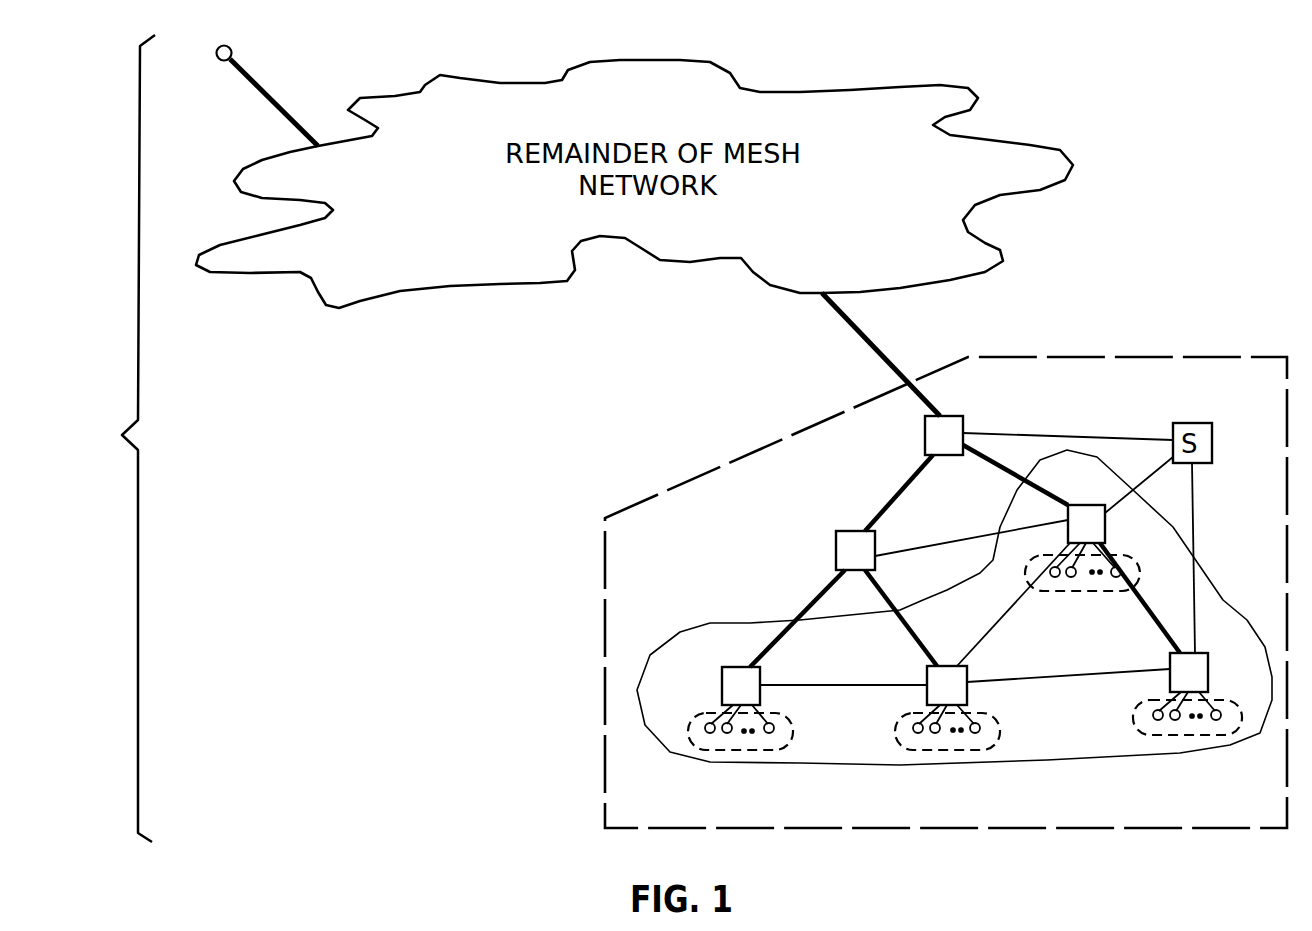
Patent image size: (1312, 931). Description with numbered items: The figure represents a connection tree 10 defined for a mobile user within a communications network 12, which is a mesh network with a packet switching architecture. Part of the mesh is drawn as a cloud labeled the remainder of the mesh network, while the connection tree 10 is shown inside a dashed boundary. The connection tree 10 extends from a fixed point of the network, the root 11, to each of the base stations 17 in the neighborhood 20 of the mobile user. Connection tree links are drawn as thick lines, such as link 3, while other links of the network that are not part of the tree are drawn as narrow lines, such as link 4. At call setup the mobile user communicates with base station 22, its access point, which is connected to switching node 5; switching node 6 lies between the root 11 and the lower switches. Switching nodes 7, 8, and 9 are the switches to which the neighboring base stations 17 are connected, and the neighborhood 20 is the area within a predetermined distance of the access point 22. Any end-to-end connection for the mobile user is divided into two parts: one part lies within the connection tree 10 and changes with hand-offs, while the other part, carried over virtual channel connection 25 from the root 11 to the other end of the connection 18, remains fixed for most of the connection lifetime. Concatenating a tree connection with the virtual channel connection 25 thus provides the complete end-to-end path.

The link 3 is at (902, 487).
The link 4 is at (953, 533).
The switching node 5 is at (948, 666).
The switching node 6 is at (835, 551).
The switching node 7 is at (720, 683).
The switching node 8 is at (1092, 505).
The switching node 9 is at (1210, 668).
The connection tree 10 is at (605, 592).
The root 11 is at (962, 416).
The communications network 12 is at (120, 438).
The base stations 17 is at (1100, 592).
The other end of the connection 18 is at (213, 63).
The neighborhood 20 is at (710, 625).
The base station 22 is at (937, 733).
The virtual channel connection 25 is at (272, 92).